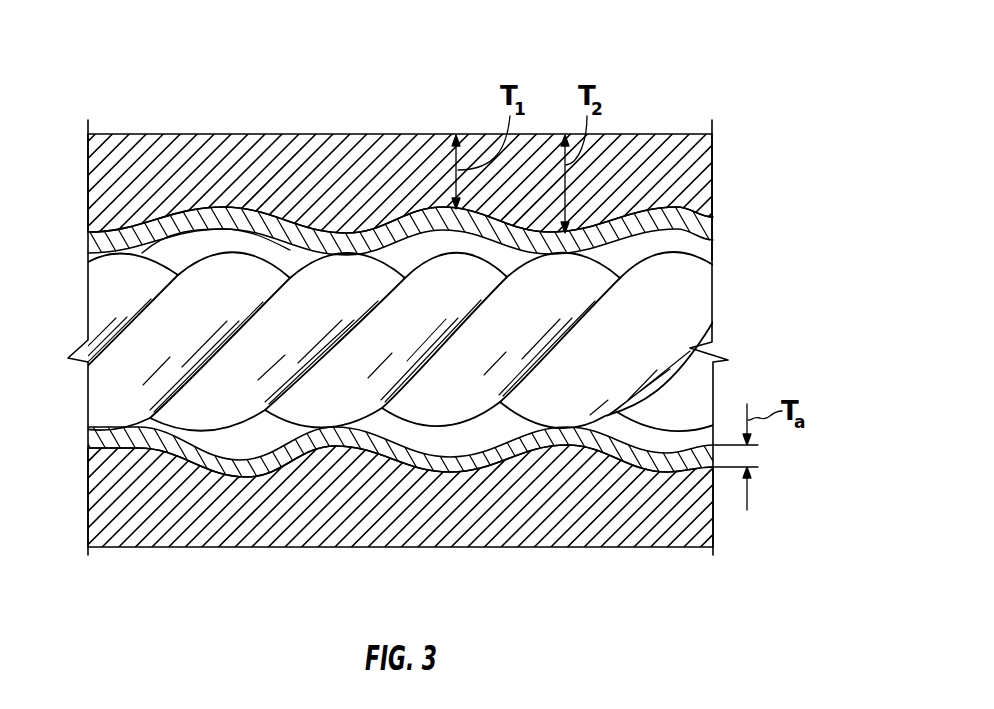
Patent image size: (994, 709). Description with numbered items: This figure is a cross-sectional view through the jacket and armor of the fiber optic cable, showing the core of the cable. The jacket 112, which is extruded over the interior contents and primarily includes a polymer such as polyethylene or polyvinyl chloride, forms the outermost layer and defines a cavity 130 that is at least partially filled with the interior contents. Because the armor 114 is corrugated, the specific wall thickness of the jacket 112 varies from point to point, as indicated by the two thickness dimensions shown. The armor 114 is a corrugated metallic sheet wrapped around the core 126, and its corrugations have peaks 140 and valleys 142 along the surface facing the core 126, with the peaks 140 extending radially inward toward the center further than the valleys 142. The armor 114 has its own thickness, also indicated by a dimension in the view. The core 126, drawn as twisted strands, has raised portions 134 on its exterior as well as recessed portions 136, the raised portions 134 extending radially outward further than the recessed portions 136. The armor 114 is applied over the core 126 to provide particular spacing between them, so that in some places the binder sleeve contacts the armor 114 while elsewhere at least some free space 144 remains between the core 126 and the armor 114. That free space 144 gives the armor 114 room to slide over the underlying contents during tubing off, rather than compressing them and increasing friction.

The jacket 112 is at (123, 148).
The armor 114 is at (712, 228).
The core 126 is at (120, 428).
The cavity 130 is at (200, 228).
The raised portions 134 is at (140, 272).
The recessed portions 136 is at (458, 340).
The peaks 140 is at (347, 252).
The valleys 142 is at (671, 228).
The free space 144 is at (441, 247).